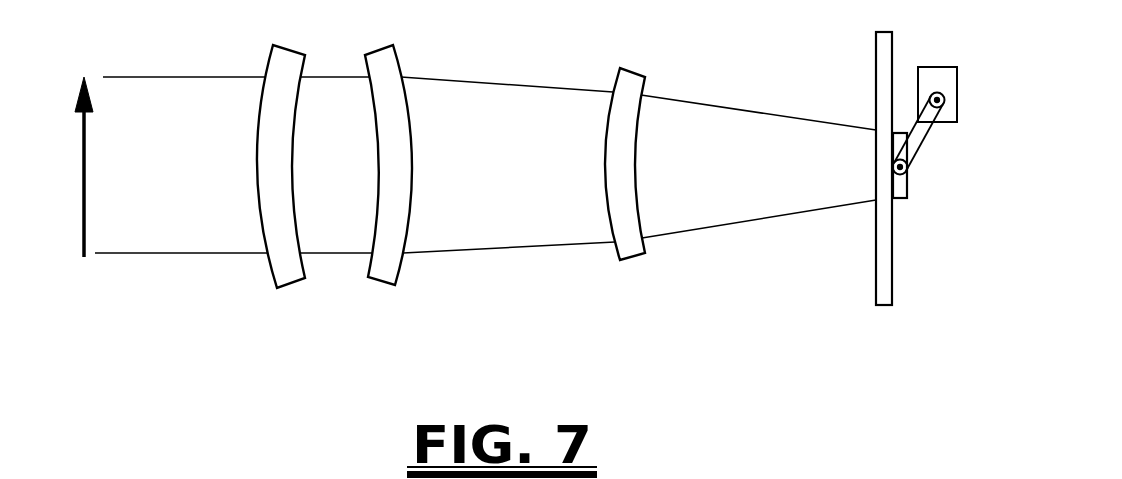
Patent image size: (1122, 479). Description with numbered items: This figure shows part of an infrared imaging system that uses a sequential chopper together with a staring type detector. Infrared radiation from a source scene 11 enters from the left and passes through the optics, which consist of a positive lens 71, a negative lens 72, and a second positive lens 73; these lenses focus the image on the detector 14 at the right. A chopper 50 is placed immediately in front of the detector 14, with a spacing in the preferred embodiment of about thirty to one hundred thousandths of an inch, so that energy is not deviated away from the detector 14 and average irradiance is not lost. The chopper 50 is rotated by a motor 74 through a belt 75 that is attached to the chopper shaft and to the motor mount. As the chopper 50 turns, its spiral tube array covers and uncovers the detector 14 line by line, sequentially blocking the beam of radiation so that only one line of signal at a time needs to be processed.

The source scene 11 is at (86, 168).
The positive lens 71 is at (292, 290).
The negative lens 72 is at (380, 285).
The second positive lens 73 is at (633, 260).
The chopper 50 is at (889, 318).
The detector 14 is at (906, 218).
The motor 74 is at (937, 67).
The belt 75 is at (920, 140).